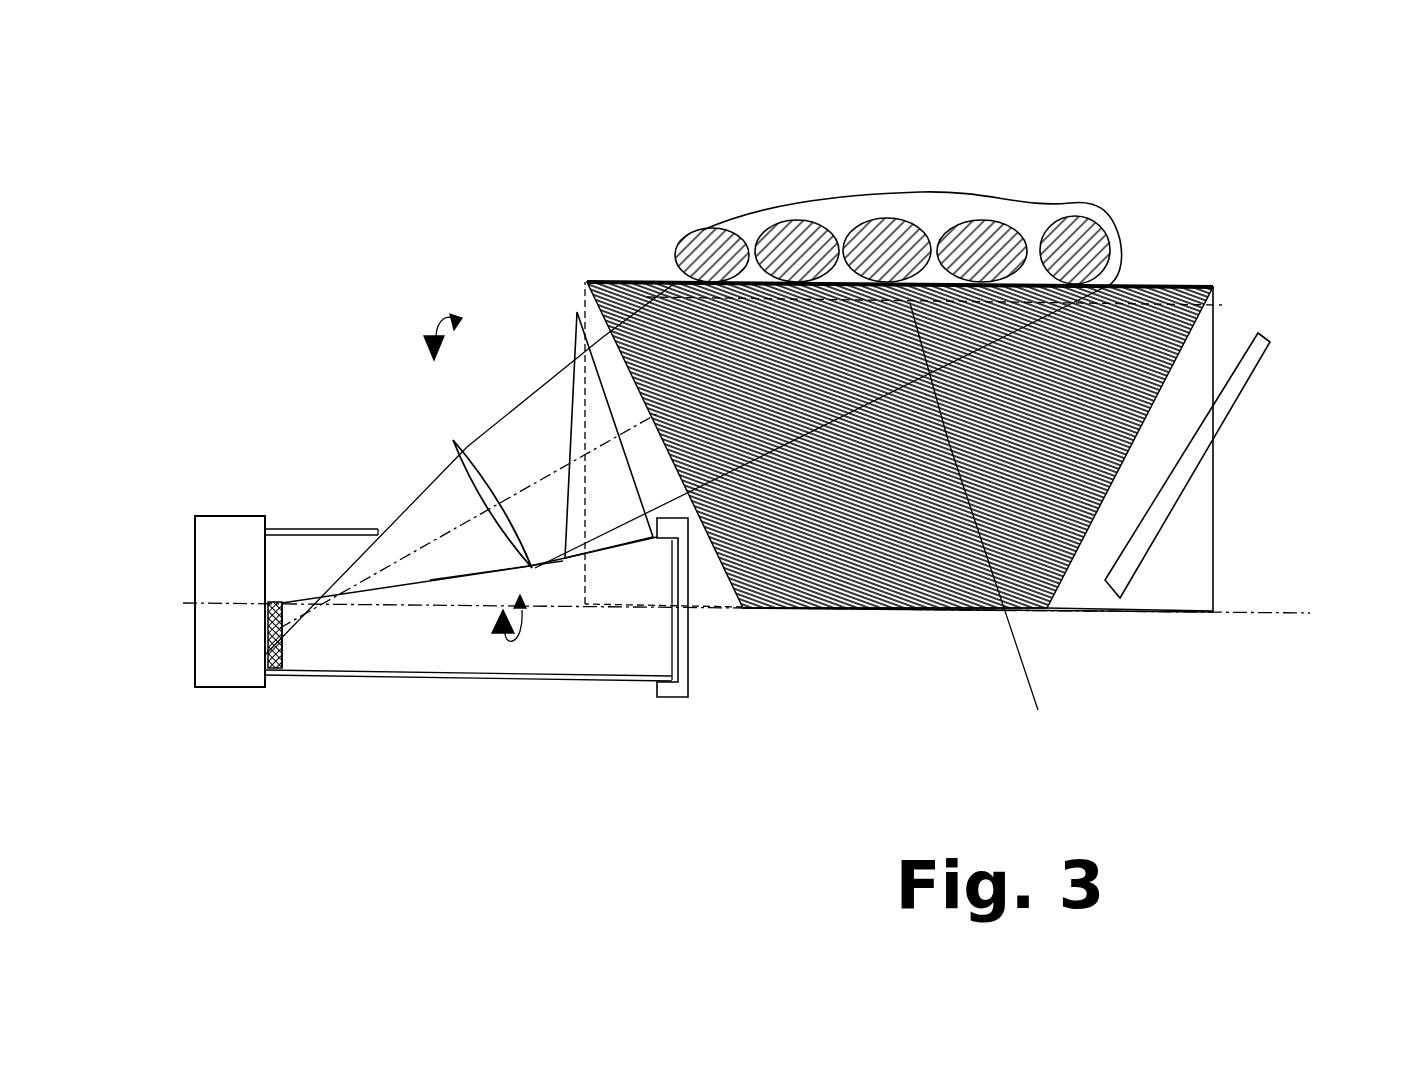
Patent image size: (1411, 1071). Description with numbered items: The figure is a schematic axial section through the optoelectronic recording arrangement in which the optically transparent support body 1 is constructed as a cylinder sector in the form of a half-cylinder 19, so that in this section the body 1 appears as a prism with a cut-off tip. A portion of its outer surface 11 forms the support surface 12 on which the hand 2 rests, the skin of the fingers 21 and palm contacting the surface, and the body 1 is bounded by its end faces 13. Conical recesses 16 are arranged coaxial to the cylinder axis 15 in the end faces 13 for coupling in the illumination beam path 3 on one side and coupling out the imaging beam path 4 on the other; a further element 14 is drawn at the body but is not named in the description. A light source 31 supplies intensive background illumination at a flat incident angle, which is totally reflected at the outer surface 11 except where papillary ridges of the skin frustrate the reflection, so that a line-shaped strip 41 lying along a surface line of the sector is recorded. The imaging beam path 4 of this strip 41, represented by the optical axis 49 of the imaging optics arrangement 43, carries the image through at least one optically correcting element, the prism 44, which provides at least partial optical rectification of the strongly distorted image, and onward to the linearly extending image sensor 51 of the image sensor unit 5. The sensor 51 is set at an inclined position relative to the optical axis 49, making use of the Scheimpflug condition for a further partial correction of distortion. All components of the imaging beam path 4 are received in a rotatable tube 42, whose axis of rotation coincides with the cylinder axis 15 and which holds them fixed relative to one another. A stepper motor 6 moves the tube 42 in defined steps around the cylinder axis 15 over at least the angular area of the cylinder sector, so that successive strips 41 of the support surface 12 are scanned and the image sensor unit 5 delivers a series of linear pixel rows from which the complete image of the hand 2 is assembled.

The support body 1 is at (848, 590).
The hand 2 is at (847, 208).
The illumination beam path 3 is at (1117, 612).
The imaging beam path 4 is at (593, 333).
The image sensor unit 5 is at (270, 680).
The stepper motor 6 is at (205, 678).
The outer surface 11 is at (618, 280).
The support surface 12 is at (1135, 283).
The end face 13 is at (1217, 300).
The correction prism 14 is at (577, 417).
The cylinder axis 15 is at (1247, 617).
The conical recess 16 is at (892, 677).
The half-cylinder 19 is at (1213, 569).
The fingers 21 is at (918, 247).
The light source 31 is at (1235, 378).
The strip 41 is at (986, 535).
The tube 42 is at (577, 677).
The imaging optics arrangement 43 is at (453, 440).
The prism 44 is at (453, 440).
The optical axis 49 is at (435, 540).
The image sensor 51 is at (280, 645).